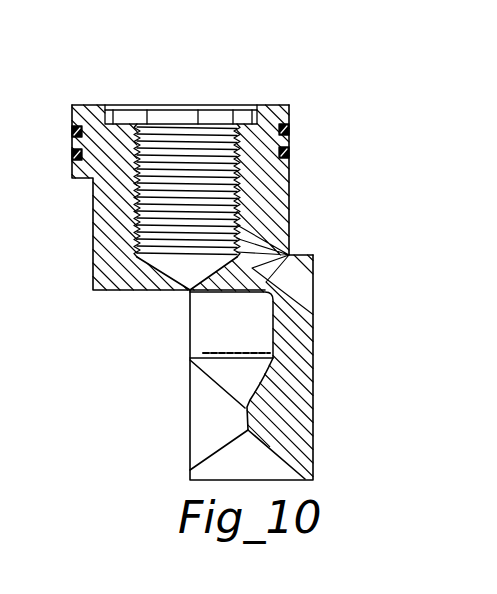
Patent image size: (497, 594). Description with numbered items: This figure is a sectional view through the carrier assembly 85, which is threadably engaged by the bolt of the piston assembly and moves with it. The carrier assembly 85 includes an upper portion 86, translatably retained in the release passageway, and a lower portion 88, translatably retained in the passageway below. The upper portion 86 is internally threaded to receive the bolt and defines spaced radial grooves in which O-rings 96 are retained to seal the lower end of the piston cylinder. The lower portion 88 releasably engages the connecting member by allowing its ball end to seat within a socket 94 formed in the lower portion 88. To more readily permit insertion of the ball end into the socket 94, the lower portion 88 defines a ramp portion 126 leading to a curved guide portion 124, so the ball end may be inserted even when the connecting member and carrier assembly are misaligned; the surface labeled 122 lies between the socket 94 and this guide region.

The carrier assembly 85 is at (104, 72).
The upper portion 86 is at (292, 202).
The lower portion 88 is at (315, 333).
The socket 94 is at (198, 323).
The O-rings 96 is at (290, 151).
The conical seat 122 is at (230, 373).
The curved guide portion 124 is at (205, 440).
The ramp portion 126 is at (255, 450).